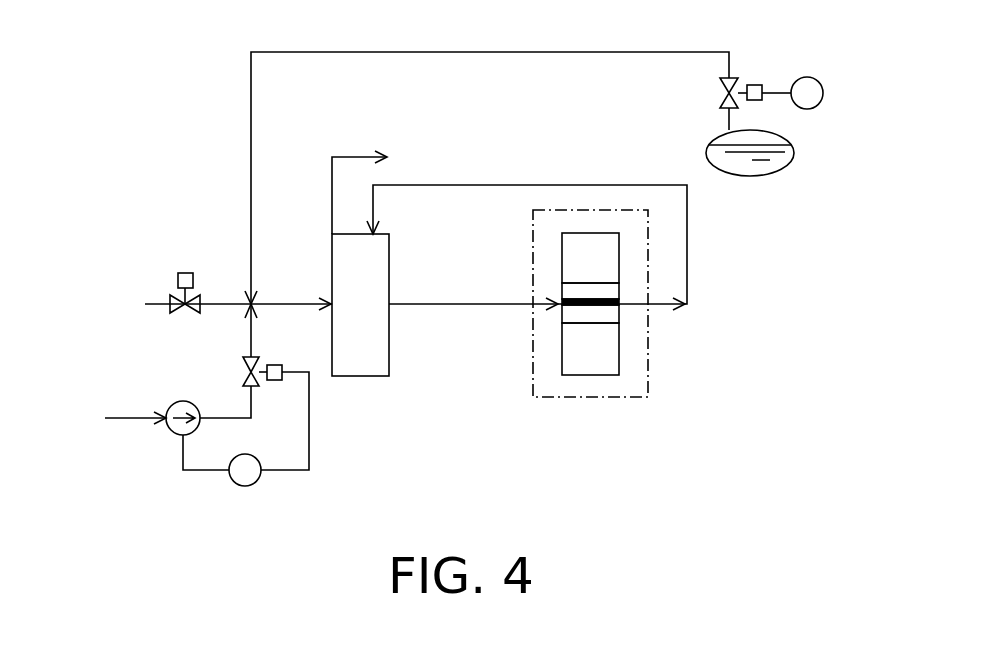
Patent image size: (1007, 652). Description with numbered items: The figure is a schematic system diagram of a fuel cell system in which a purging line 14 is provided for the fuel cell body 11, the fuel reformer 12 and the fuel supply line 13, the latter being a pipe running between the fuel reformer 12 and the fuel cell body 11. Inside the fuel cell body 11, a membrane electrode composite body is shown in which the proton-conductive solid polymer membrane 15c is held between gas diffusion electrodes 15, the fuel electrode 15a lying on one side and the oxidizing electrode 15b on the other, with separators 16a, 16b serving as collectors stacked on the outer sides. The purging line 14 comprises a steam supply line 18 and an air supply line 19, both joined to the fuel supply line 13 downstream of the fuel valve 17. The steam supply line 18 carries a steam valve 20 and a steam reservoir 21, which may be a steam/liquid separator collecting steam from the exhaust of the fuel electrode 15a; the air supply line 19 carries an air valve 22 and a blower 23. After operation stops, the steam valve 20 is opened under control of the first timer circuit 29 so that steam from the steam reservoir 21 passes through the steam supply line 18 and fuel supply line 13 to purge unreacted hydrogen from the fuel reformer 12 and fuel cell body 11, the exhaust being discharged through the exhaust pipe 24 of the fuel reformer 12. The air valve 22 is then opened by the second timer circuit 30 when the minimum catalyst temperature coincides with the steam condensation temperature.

The fuel cell body 11 is at (549, 399).
The fuel reformer 12 is at (360, 378).
The fuel supply line 13 is at (451, 303).
The purging line 14 is at (68, 190).
The gas diffusion electrodes 15 is at (742, 320).
The fuel electrode 15a is at (606, 316).
The oxidizing electrode 15b is at (612, 291).
The solid polymer membrane 15c is at (612, 304).
The separator 16a is at (606, 376).
The separator 16b is at (588, 232).
The fuel valve 17 is at (184, 272).
The steam supply line 18 is at (251, 182).
The air supply line 19 is at (123, 414).
The steam valve 20 is at (736, 80).
The steam reservoir 21 is at (714, 140).
The air valve 22 is at (277, 365).
The blower 23 is at (182, 400).
The exhaust pipe 24 is at (345, 156).
The first timer circuit 29 is at (804, 78).
The second timer circuit 30 is at (245, 486).